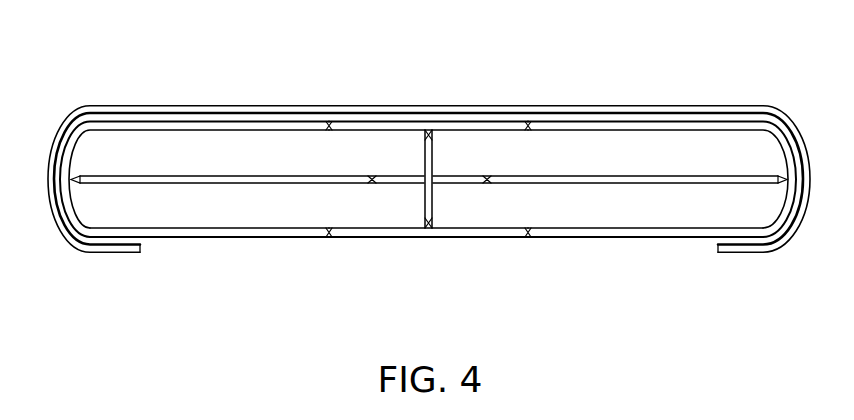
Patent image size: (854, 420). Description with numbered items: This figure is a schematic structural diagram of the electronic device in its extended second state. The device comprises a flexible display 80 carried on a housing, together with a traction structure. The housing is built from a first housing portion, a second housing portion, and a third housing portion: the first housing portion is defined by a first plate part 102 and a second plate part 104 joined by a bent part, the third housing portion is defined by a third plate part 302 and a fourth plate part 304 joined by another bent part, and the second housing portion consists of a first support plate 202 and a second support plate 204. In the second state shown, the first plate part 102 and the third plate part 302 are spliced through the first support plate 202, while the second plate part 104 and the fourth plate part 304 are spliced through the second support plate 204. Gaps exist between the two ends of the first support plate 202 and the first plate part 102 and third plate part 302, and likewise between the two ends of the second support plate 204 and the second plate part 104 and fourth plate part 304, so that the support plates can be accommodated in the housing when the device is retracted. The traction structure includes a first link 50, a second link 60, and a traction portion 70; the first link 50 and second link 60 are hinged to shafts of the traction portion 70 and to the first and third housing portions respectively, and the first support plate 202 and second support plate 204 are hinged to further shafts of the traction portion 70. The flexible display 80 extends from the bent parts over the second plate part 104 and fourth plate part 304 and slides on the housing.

The first link 50 is at (190, 175).
The second link 60 is at (685, 175).
The traction portion 70 is at (420, 181).
The flexible display 80 is at (355, 106).
The first plate part 102 is at (275, 128).
The second plate part 104 is at (165, 238).
The first support plate 202 is at (475, 128).
The second support plate 204 is at (348, 238).
The third plate part 302 is at (598, 128).
The fourth plate part 304 is at (675, 238).